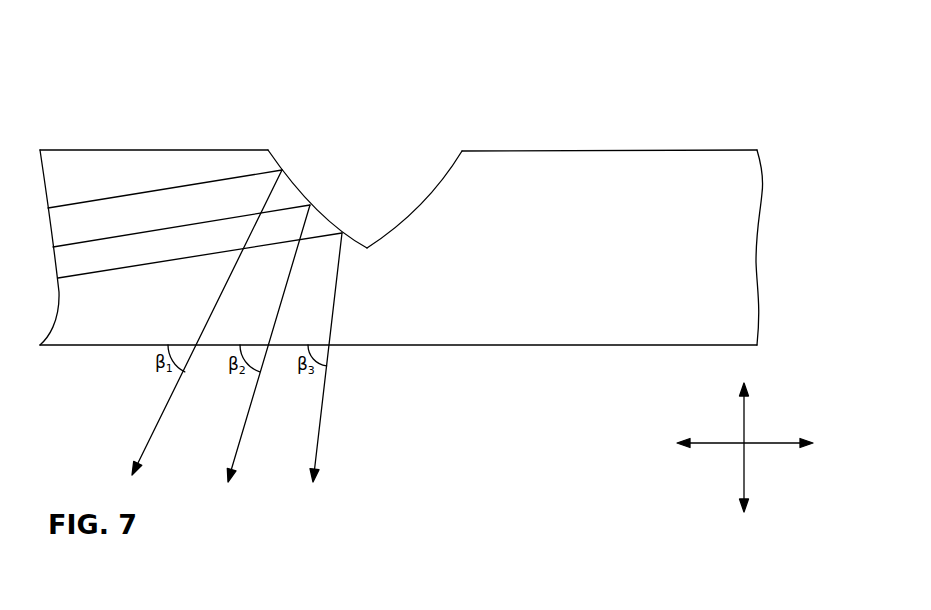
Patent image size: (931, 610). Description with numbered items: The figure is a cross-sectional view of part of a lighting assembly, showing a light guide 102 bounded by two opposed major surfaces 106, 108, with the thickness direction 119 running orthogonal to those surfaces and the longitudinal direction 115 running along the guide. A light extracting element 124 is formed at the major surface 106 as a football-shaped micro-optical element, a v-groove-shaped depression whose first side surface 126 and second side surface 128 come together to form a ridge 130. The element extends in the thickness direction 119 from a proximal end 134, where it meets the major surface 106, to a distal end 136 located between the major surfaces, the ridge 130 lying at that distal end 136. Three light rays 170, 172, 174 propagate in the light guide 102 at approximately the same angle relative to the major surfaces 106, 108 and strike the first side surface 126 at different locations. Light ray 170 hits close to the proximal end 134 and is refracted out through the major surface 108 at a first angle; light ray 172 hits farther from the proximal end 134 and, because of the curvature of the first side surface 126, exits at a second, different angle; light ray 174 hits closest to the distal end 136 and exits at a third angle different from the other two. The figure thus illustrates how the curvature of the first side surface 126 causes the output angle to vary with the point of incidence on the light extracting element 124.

The light guide 102 is at (703, 173).
The major surface 106 is at (595, 150).
The major surface 108 is at (495, 345).
The light extracting element 124 is at (383, 141).
The first side surface 126 is at (295, 178).
The second side surface 128 is at (427, 202).
The ridge 130 is at (367, 248).
The proximal end 134 is at (460, 149).
The distal end 136 is at (388, 254).
The light ray 170 is at (165, 402).
The light ray 172 is at (248, 425).
The light ray 174 is at (325, 400).
The thickness direction 119 is at (745, 421).
The longitudinal direction 115 is at (723, 443).